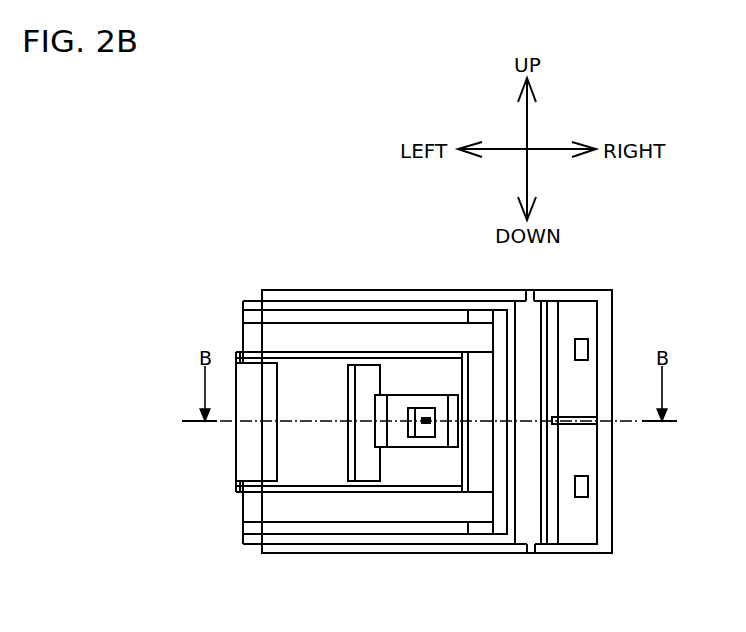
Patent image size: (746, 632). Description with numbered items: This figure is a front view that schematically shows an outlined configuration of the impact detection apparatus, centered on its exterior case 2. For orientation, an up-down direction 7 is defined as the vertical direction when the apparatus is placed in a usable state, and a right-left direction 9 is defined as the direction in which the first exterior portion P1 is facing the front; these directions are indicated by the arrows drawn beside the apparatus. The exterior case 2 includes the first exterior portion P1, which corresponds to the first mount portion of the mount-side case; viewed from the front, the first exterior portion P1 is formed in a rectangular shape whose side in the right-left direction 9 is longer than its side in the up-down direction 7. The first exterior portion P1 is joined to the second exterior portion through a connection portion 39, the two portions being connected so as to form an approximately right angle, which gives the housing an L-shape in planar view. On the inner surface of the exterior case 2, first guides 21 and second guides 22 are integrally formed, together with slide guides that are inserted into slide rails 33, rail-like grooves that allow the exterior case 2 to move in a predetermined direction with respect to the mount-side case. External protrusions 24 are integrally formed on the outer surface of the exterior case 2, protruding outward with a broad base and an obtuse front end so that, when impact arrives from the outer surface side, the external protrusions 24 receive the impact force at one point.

The exterior case 2 is at (277, 240).
The up-down direction 7 is at (527, 127).
The right-left direction 9 is at (500, 152).
The first guides 21 is at (302, 495).
The second guides 22 is at (382, 465).
The external protrusions 24 is at (438, 447).
The slide rails 33 is at (578, 423).
The connection portion 39 is at (235, 441).
The first exterior portion P1 is at (242, 500).